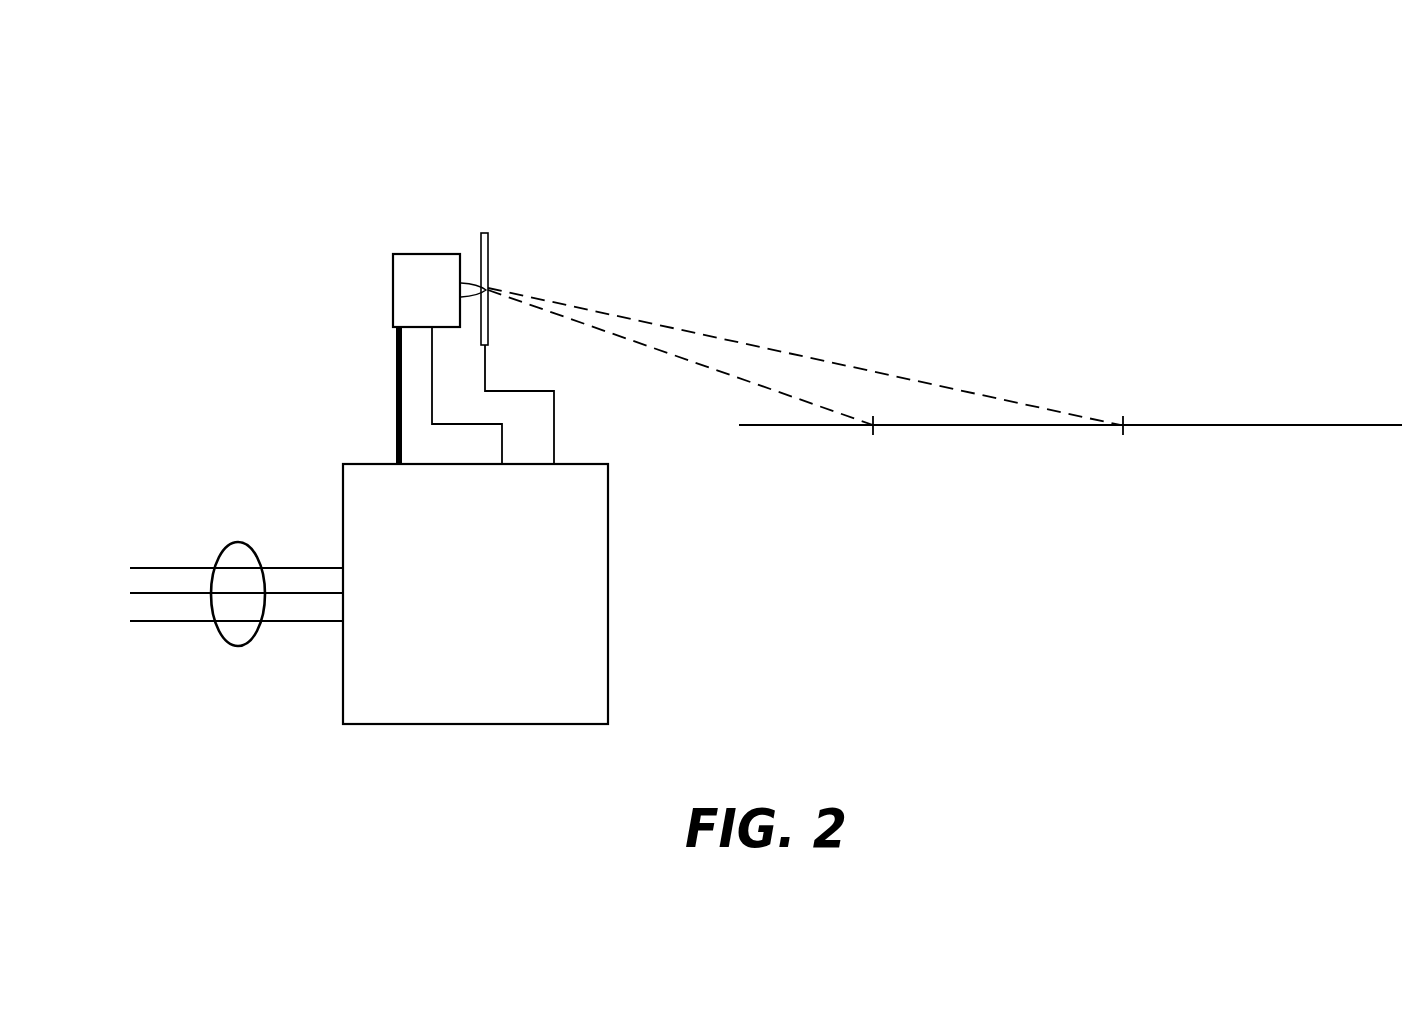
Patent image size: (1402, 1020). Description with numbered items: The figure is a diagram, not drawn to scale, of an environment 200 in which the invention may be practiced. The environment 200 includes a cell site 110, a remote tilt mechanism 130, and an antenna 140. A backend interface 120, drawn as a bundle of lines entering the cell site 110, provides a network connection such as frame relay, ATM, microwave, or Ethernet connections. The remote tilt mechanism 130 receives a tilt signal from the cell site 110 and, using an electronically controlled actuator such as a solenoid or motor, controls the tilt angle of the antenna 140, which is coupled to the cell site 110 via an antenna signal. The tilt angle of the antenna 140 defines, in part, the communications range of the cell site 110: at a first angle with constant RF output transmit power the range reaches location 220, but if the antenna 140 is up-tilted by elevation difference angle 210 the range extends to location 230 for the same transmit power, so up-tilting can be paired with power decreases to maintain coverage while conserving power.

The cell site 110 is at (593, 463).
The backend interface 120 is at (238, 542).
The remote tilt mechanism 130 is at (431, 254).
The antenna 140 is at (484, 233).
The environment 200 is at (1110, 228).
The elevation difference angle 210 is at (763, 385).
The location 220 is at (873, 435).
The location 230 is at (1123, 435).